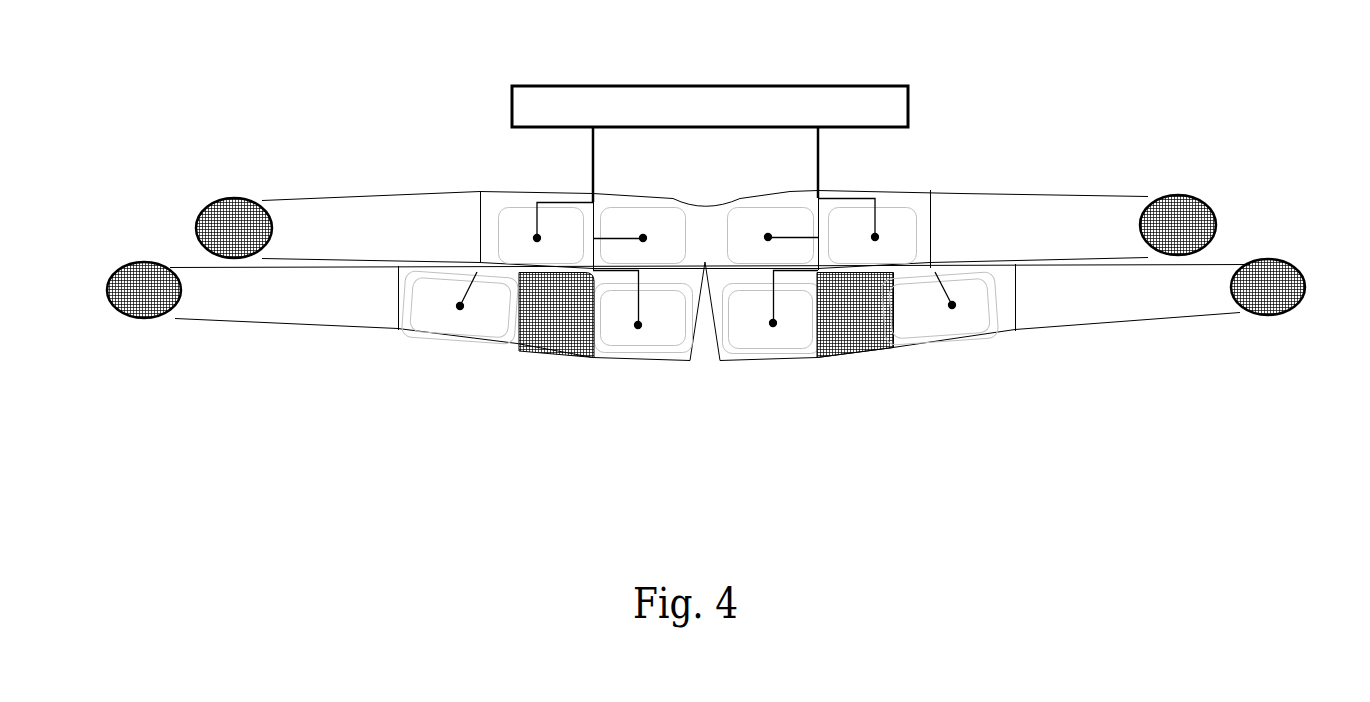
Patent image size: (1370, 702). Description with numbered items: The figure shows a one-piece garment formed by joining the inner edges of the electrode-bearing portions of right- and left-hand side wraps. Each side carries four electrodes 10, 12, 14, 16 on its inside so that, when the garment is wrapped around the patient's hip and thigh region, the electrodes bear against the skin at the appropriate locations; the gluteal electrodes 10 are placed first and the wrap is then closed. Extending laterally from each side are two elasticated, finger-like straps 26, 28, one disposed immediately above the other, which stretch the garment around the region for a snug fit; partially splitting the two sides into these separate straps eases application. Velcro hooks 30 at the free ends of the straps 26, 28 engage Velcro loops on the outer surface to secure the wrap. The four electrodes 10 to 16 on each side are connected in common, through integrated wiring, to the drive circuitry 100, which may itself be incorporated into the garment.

The drive circuitry 100 is at (747, 103).
The gluteal electrodes 10 is at (753, 215).
The electrodes 12 is at (520, 215).
The electrodes 14 is at (475, 323).
The electrodes 16 is at (752, 332).
The strap 26 is at (360, 205).
The strap 28 is at (340, 308).
The Velcro hooks 30 is at (217, 223).